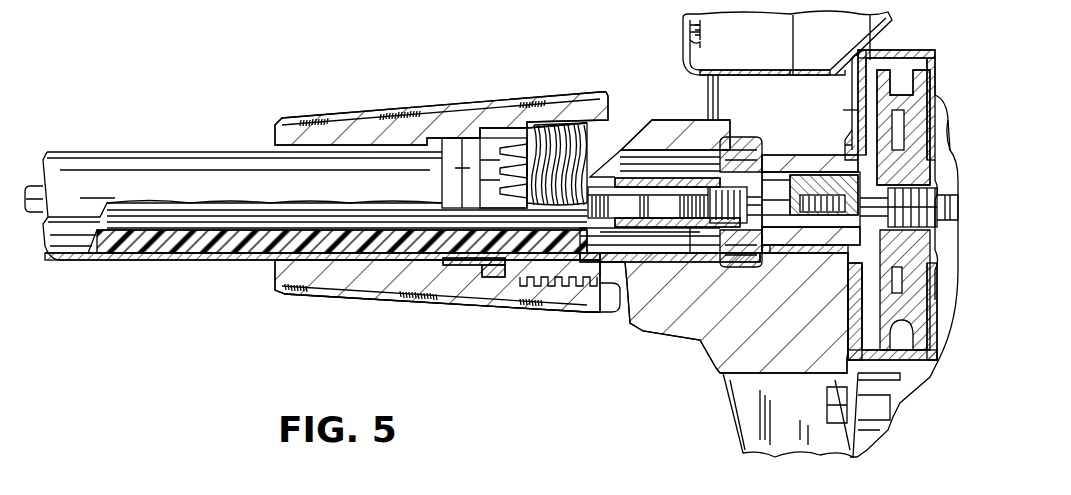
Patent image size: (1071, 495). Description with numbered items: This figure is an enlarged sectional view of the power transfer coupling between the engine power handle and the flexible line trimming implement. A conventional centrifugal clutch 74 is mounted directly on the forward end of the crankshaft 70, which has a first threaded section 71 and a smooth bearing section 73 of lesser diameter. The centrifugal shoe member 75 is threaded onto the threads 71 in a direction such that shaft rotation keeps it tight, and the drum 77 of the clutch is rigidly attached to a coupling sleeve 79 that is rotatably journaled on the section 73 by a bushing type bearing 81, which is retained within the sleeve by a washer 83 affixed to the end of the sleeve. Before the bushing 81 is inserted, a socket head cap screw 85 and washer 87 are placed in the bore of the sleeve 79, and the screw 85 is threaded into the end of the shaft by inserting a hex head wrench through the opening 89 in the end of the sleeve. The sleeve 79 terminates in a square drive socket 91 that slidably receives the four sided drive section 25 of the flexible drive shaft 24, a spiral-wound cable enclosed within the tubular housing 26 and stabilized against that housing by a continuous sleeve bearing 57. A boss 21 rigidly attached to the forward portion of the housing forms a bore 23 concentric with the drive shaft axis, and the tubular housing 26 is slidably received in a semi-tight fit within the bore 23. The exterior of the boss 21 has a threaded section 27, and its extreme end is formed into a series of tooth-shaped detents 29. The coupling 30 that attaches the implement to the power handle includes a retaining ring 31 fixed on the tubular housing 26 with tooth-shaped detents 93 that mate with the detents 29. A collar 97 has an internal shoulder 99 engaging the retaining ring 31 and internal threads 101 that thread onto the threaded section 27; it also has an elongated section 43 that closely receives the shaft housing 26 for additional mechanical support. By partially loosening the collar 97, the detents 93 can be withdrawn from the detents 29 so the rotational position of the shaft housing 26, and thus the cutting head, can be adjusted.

The boss 21 is at (657, 320).
The bore 23 is at (566, 278).
The flexible drive shaft 24 is at (255, 212).
The squared drive section 25 is at (612, 205).
The tubular housing 26 is at (193, 262).
The threaded section 27 is at (570, 165).
The tooth-shaped detents 29 is at (508, 128).
The upper coupling assembly 30 is at (432, 316).
The retaining ring 31 is at (492, 285).
The elongated section 43 is at (338, 128).
The continuous sleeve bearing 57 is at (136, 243).
The crankshaft 70 is at (948, 120).
The first threaded section 71 is at (917, 167).
The smooth bearing section 73 is at (848, 262).
The centrifugal clutch 74 is at (829, 124).
The centrifugal shoe member 75 is at (862, 114).
The drum 77 is at (853, 98).
The coupling sleeve 79 is at (815, 166).
The bushing type bearing 81 is at (815, 245).
The washer 83 is at (850, 166).
The socket head cap screw 85 is at (762, 240).
The washer 87 is at (790, 230).
The opening 89 is at (750, 205).
The square drive socket 91 is at (690, 240).
The tooth-shaped detents 93 is at (500, 168).
The collar 97 is at (375, 285).
The internal shoulder 99 is at (470, 130).
The internal threads 101 is at (548, 125).